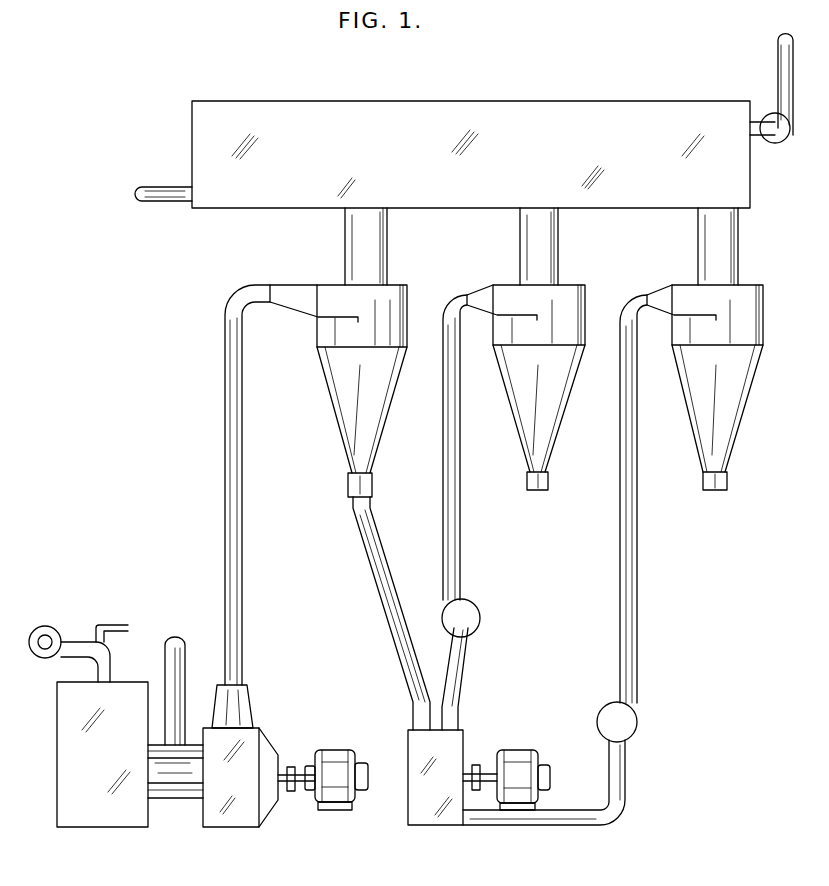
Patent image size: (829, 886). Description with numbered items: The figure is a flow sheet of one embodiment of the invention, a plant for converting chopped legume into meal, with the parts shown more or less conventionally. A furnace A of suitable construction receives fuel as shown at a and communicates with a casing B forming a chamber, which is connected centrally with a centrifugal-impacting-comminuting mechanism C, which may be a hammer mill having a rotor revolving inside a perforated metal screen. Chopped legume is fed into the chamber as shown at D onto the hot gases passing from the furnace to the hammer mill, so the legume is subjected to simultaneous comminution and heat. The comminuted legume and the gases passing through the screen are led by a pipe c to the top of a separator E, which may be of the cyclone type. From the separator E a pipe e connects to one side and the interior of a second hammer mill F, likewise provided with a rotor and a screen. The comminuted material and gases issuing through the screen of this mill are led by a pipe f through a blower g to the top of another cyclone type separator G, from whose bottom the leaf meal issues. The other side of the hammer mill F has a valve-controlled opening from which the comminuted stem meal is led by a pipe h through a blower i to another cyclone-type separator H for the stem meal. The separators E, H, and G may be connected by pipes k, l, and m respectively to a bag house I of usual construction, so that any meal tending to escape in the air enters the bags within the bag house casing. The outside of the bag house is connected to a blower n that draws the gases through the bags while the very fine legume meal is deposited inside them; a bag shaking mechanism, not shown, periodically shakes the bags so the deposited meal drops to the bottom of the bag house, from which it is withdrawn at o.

The bag house I is at (489, 100).
The blower n is at (773, 113).
The withdrawal point o is at (158, 201).
The pipe k is at (388, 251).
The pipe l is at (562, 250).
The pipe m is at (740, 256).
The separator E is at (335, 403).
The cyclone-type separator H is at (512, 420).
The cyclone type separator G is at (690, 420).
The pipe c is at (243, 518).
The pipe e is at (383, 548).
The pipe h is at (461, 560).
The blower i is at (480, 620).
The pipe f is at (640, 596).
The blower g is at (606, 708).
The second hammer mill F is at (432, 826).
The furnace A is at (100, 828).
The fuel supply a is at (118, 658).
The legume feed D is at (186, 672).
The casing B is at (178, 800).
The centrifugal-impacting-comminuting mechanism C is at (238, 828).